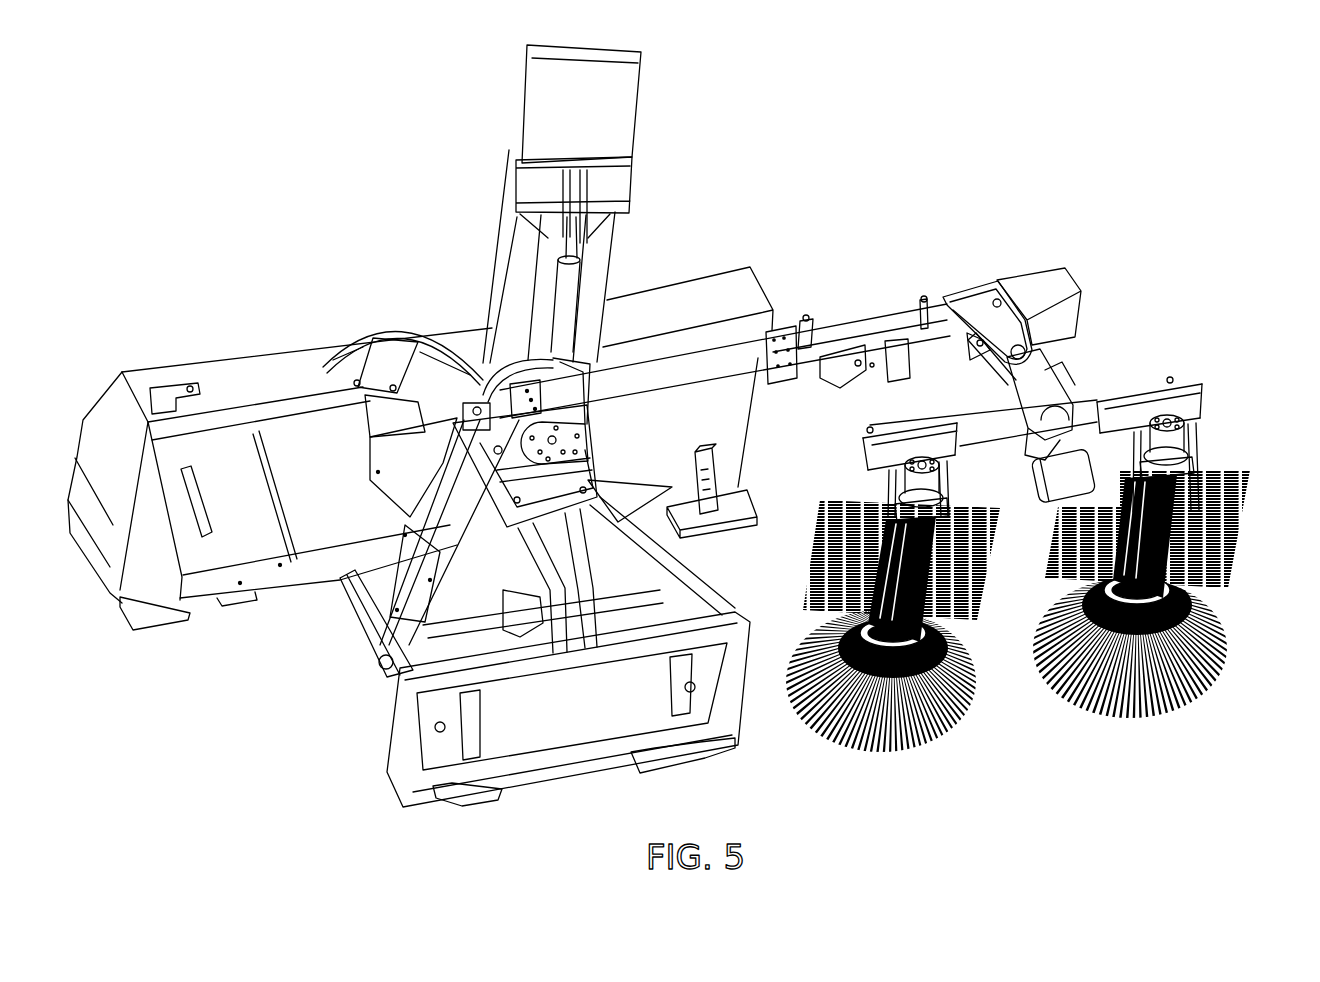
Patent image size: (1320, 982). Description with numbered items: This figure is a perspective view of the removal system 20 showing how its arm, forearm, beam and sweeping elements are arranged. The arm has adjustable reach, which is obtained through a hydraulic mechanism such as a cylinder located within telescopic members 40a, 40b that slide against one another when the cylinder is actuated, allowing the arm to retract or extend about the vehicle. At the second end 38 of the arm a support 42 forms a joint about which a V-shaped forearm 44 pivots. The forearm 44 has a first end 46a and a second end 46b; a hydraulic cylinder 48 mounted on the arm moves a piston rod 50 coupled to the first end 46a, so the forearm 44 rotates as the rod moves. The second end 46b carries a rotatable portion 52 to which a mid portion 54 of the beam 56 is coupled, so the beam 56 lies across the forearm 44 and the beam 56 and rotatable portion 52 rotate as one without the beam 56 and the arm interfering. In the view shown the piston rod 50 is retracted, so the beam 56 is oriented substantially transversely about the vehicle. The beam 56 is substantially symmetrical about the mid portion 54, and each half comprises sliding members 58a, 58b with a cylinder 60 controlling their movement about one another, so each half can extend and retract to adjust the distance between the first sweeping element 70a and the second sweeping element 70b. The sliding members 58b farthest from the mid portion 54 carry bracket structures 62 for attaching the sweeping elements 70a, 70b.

The removal system 20 is at (298, 170).
The second end 38 is at (1015, 262).
The telescopic member 40a is at (703, 358).
The telescopic member 40b is at (833, 332).
The support 42 is at (987, 304).
The forearm 44 is at (990, 393).
The first end 46a is at (967, 368).
The second end 46b is at (1066, 384).
The hydraulic cylinder 48 is at (880, 367).
The piston rod 50 is at (957, 358).
The rotatable portion 52 is at (1050, 408).
The mid portion 54 is at (1021, 478).
The beam 56 is at (1039, 566).
The sliding member 58a is at (984, 434).
The sliding member 58b is at (1197, 398).
The cylinder 60 is at (1100, 394).
The bracket structure 62 is at (871, 494).
The first sweeping element 70a is at (920, 771).
The second sweeping element 70b is at (1163, 721).